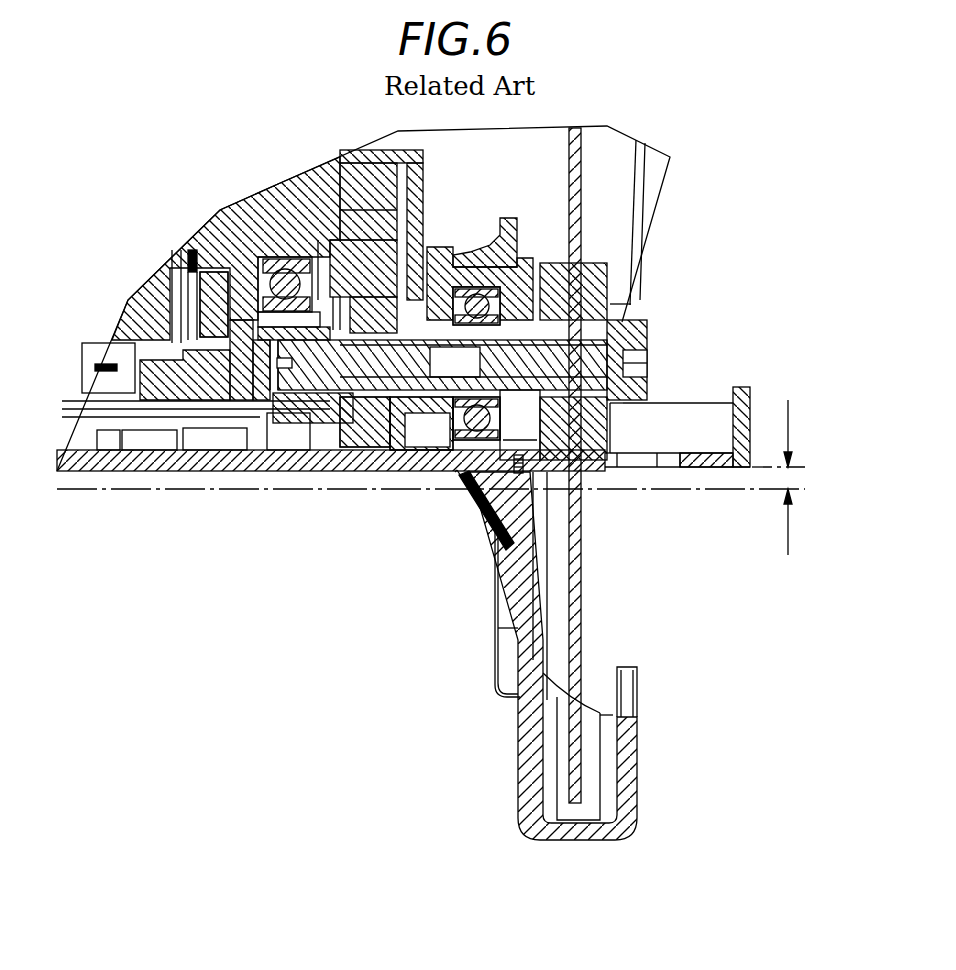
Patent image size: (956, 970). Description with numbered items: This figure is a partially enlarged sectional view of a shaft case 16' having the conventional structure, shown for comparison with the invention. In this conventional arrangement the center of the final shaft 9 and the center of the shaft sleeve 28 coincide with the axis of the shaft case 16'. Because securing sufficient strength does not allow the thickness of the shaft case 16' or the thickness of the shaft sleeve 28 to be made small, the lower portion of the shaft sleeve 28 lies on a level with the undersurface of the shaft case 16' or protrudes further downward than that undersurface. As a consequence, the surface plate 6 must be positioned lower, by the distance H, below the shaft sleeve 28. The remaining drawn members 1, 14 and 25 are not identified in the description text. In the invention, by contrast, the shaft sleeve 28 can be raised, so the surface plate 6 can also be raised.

The plate 1 is at (582, 612).
The surface plate 6 is at (165, 472).
The final shaft 9 is at (353, 460).
The cover 14 is at (383, 462).
The shaft case 16' is at (454, 516).
The bracket 25 is at (517, 733).
The shaft sleeve 28 is at (487, 505).
The lowering amount H is at (788, 477).